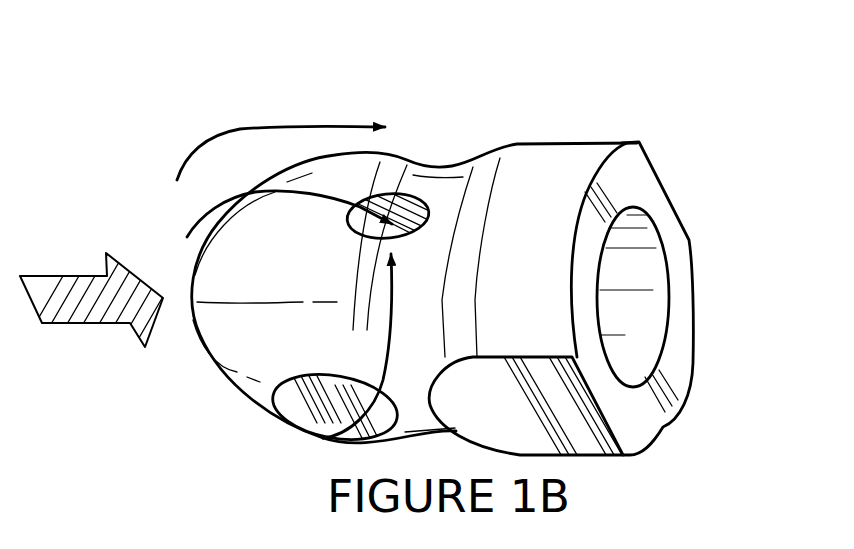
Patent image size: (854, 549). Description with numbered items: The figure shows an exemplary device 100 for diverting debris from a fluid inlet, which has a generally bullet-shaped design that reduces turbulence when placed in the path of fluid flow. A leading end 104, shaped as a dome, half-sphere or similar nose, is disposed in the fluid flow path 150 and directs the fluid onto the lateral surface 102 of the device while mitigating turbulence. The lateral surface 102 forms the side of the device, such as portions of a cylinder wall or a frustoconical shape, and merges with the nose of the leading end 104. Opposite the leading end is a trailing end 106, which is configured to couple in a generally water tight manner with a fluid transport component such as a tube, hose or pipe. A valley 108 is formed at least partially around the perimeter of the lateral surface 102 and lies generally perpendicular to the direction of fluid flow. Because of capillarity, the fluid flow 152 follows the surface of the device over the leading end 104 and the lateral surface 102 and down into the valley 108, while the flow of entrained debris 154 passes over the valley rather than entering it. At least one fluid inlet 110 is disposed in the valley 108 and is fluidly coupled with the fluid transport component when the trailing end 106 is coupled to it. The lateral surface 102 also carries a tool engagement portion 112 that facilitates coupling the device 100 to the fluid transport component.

The device 100 is at (196, 91).
The lateral surface 102 is at (628, 70).
The leading end 104 is at (168, 253).
The trailing end 106 is at (663, 150).
The valley 108 is at (461, 150).
The fluid inlet 110 is at (323, 438).
The tool engagement portion 112 is at (587, 410).
The fluid flow path 150 is at (68, 275).
The fluid flow into the valley 152 is at (208, 202).
The flow of debris 154 is at (210, 134).